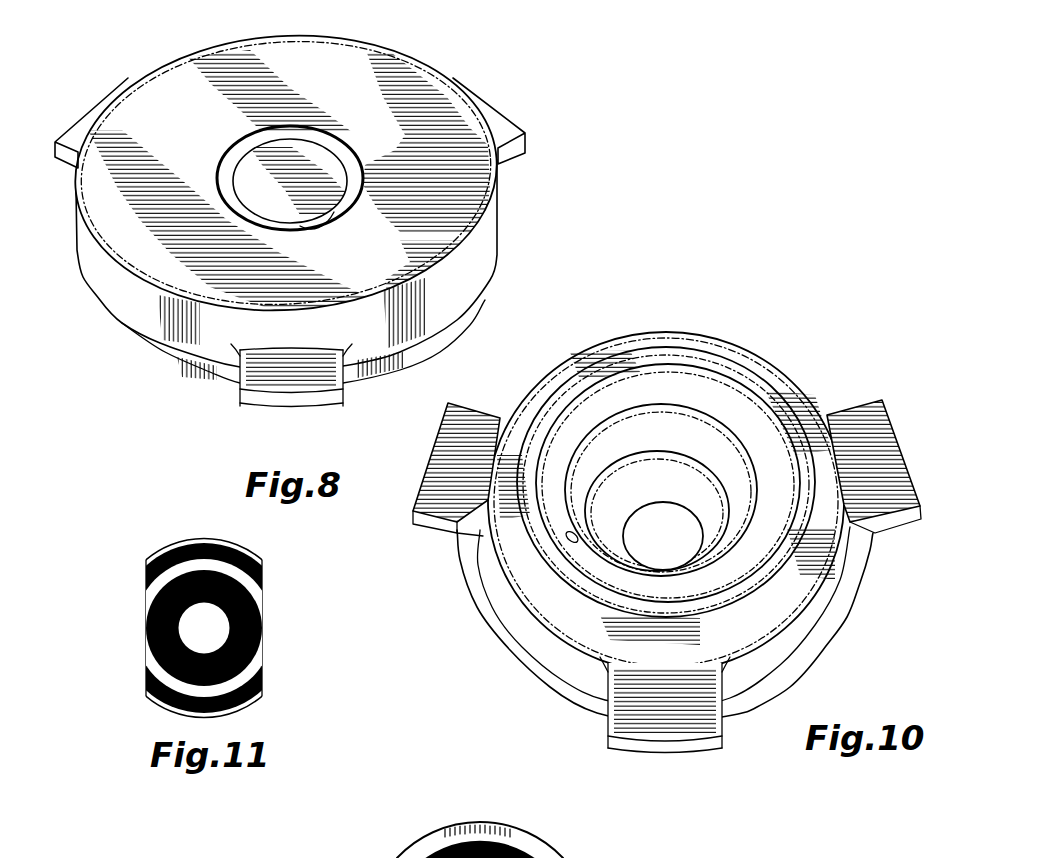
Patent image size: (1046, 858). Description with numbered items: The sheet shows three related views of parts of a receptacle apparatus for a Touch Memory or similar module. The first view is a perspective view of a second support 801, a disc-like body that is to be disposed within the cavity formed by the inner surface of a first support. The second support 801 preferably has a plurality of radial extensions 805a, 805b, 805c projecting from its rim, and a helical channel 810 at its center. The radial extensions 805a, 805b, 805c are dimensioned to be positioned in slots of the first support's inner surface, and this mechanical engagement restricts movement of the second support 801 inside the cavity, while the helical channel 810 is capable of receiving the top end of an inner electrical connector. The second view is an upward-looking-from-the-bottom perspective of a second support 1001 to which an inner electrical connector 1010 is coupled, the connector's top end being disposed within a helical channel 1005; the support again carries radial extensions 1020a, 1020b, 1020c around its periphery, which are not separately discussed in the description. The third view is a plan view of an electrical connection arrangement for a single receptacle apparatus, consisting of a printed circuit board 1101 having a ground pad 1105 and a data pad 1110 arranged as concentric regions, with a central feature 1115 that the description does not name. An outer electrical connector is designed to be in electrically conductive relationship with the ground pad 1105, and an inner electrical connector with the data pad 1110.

In FIG. 8, the second support 801 is at (530, 208).
In FIG. 8, the radial extension 805a is at (253, 404).
In FIG. 8, the radial extension 805b is at (493, 110).
In FIG. 8, the radial extension 805c is at (80, 117).
In FIG. 8, the helical channel 810 is at (305, 128).
In FIG. 10, the second support 1001 is at (580, 334).
In FIG. 10, the helical channel 1005 is at (700, 548).
In FIG. 10, the inner electrical connector 1010 is at (707, 367).
In FIG. 10, the tab 1020a is at (412, 512).
In FIG. 10, the tab 1020b is at (860, 407).
In FIG. 10, the tab 1020c is at (723, 738).
In FIG. 11, the printed circuit board 1101 is at (157, 531).
In FIG. 11, the ground pad 1105 is at (255, 698).
In FIG. 11, the data pad 1110 is at (262, 637).
In FIG. 11, the central hub 1115 is at (150, 659).